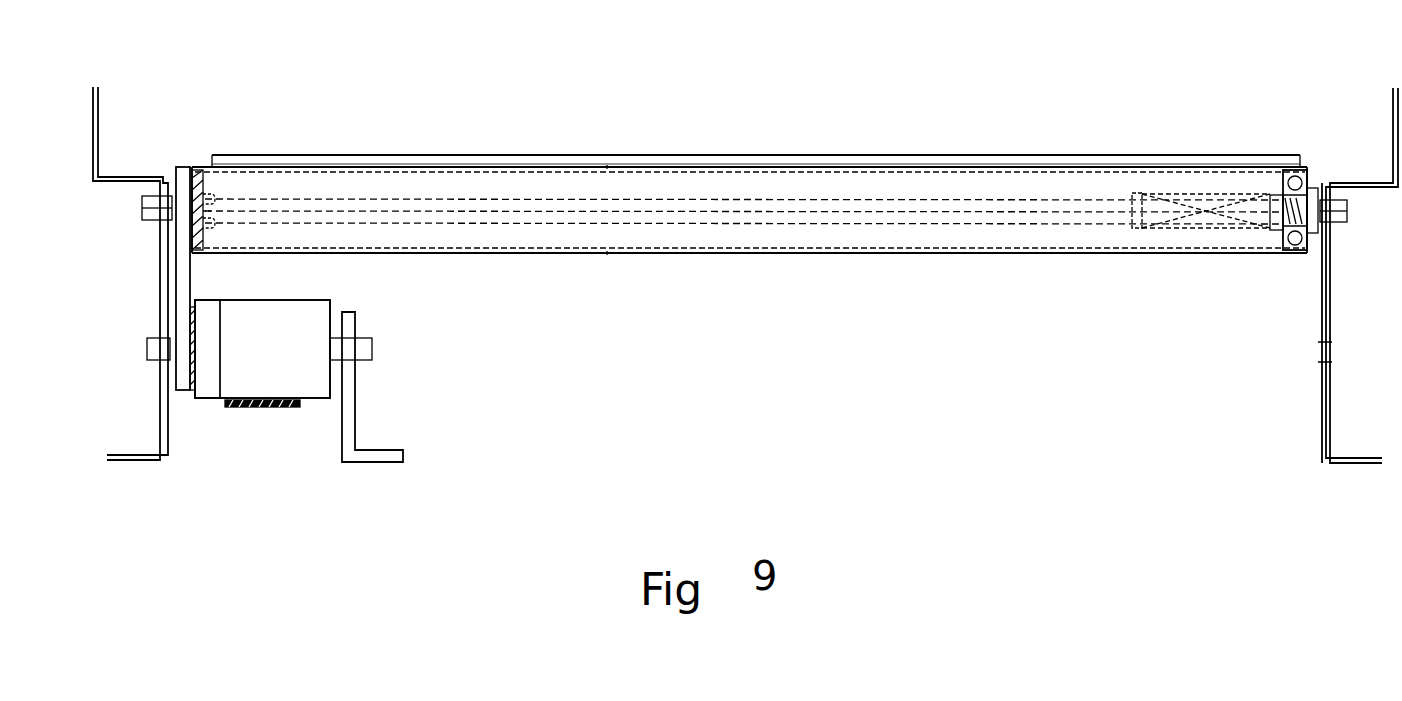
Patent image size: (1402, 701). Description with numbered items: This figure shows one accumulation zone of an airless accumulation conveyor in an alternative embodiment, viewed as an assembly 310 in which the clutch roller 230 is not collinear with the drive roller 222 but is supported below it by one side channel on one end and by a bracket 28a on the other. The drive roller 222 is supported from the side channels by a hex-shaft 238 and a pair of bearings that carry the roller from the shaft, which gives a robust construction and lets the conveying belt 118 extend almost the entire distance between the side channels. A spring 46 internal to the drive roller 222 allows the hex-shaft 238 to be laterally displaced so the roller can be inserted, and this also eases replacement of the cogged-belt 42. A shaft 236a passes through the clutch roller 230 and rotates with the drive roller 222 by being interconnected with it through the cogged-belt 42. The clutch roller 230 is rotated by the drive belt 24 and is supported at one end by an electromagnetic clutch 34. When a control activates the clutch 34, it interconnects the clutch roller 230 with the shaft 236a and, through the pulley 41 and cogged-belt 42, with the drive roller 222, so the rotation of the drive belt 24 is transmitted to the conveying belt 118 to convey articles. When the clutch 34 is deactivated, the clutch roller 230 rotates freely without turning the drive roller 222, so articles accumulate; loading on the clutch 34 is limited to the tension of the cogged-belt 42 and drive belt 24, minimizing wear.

The drive belt 24 is at (268, 410).
The bracket 28a is at (353, 427).
The electromagnetic clutch 34 is at (210, 398).
The pulley 41 is at (176, 385).
The cogged-belt 42 is at (190, 273).
The spring 46 is at (1133, 195).
The conveying belt 118 is at (443, 155).
The drive roller 222 is at (540, 253).
The clutch roller 230 is at (332, 312).
The shaft 236a is at (358, 342).
The hex-shaft 238 is at (683, 197).
The roller assembly 310 is at (1203, 150).